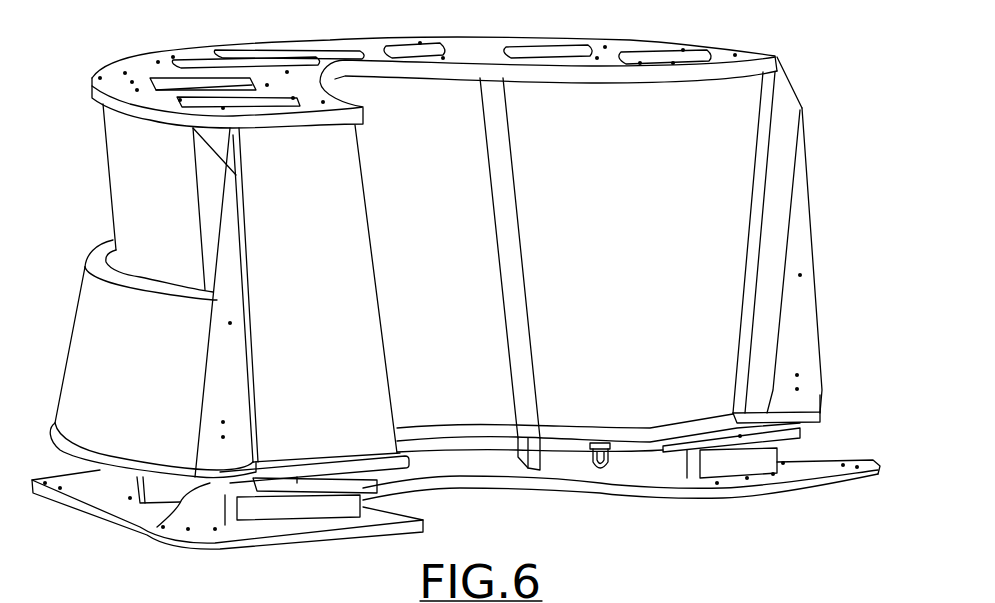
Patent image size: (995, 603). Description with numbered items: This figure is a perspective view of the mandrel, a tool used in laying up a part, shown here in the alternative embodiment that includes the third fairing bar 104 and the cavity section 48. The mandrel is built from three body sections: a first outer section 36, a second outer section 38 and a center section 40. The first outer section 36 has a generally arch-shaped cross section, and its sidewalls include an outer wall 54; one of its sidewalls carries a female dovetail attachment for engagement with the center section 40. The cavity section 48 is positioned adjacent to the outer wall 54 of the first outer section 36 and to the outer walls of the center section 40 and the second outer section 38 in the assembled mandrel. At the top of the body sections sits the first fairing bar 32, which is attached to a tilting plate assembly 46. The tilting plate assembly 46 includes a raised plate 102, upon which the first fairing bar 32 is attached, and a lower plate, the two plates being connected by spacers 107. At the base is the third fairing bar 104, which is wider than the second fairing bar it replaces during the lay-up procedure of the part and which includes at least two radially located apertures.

The first fairing bar 32 is at (467, 43).
The first outer section 36 is at (125, 133).
The outer wall 54 is at (140, 187).
The cavity section 48 is at (97, 300).
The second outer section 38 is at (702, 113).
The center section 40 is at (447, 407).
The tilting plate assembly 46 is at (807, 488).
The raised plate 102 is at (803, 433).
The third fairing bar 104 is at (217, 482).
The spacers 107 is at (732, 463).